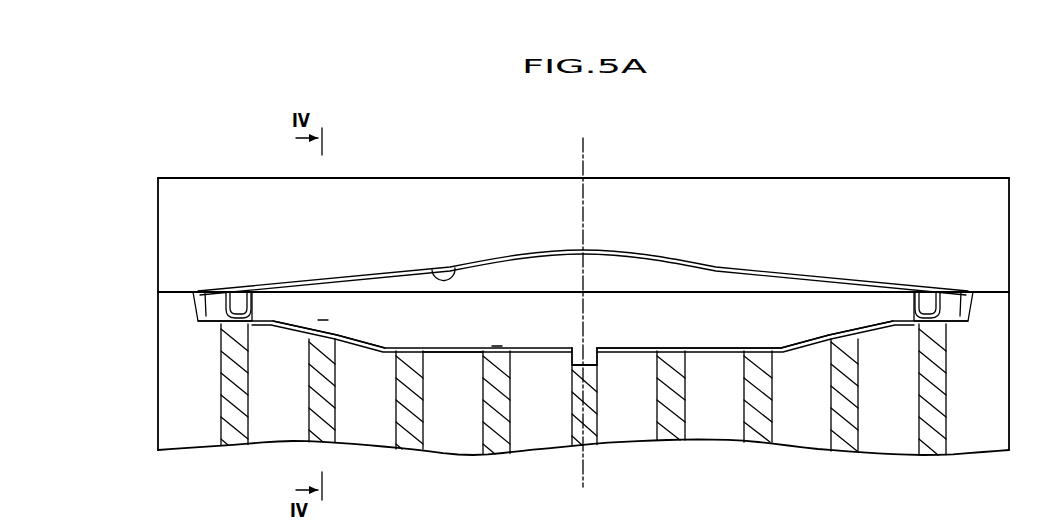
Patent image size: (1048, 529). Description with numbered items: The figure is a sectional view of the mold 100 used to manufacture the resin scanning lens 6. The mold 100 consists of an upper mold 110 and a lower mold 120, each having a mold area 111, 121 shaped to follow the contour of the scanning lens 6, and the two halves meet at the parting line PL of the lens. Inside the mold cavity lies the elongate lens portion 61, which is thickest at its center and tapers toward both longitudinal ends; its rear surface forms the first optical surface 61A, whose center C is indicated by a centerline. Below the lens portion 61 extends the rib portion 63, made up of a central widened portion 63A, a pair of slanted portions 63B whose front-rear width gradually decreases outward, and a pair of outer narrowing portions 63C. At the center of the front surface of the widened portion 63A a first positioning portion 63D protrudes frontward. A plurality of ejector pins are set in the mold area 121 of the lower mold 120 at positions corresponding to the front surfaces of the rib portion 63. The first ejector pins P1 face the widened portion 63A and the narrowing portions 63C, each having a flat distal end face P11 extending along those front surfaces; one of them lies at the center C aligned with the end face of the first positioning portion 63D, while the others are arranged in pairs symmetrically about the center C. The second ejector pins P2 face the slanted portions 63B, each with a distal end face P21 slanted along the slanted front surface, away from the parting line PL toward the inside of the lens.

The mold 100 is at (851, 176).
The upper mold 110 is at (238, 185).
The mold area 111 is at (457, 266).
The lower mold 120 is at (190, 425).
The mold area 121 is at (447, 340).
The parting line PL is at (770, 292).
The center C is at (583, 150).
The scanning lens 6 is at (583, 213).
The lens portion 61 is at (535, 270).
The first optical surface 61A is at (596, 247).
The rib portion 63 is at (579, 328).
The widened portion 63A is at (637, 335).
The slanted portion 63B is at (365, 335).
The narrowing portion 63C is at (214, 302).
The first positioning portion 63D is at (600, 364).
The first ejector pin P1 is at (235, 430).
The second ejector pin P2 is at (325, 431).
The distal end face P11 is at (497, 340).
The distal end face P21 is at (323, 323).